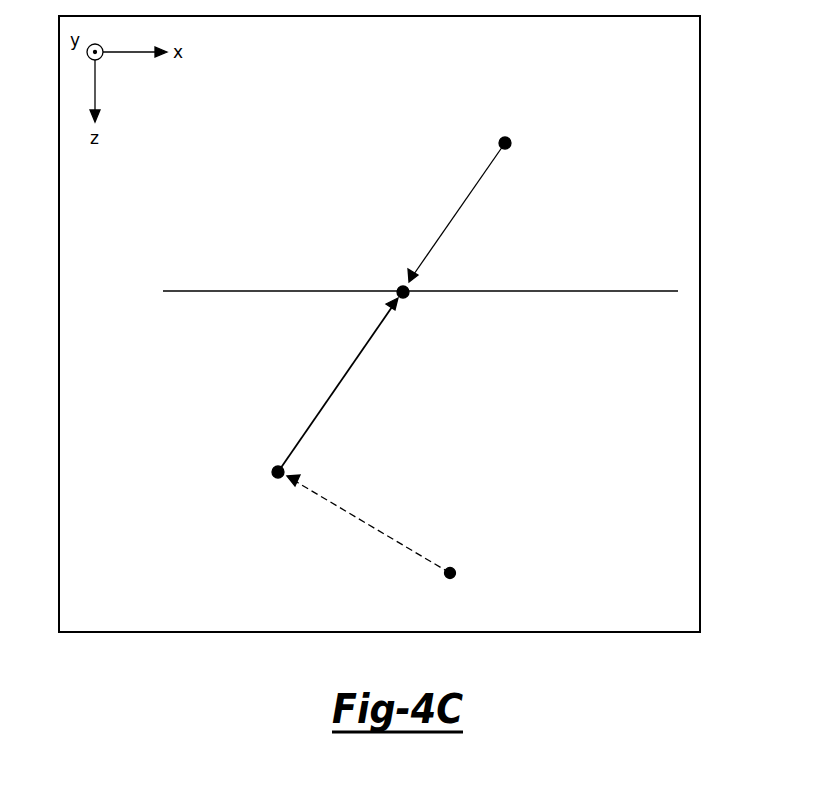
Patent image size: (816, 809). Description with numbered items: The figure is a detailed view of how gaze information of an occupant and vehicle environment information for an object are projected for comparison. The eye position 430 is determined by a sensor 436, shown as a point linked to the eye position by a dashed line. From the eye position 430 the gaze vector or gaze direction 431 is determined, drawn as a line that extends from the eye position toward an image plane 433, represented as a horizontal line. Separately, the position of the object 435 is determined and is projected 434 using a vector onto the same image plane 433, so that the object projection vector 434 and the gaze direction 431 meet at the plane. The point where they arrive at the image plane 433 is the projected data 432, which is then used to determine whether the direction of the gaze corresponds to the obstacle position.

The eye position 430 is at (272, 470).
The gaze direction 431 is at (347, 370).
The projected data 432 is at (418, 314).
The image plane 433 is at (218, 291).
The projection of object position 434 is at (460, 208).
The position of the object 435 is at (508, 138).
The sensor 436 is at (457, 570).